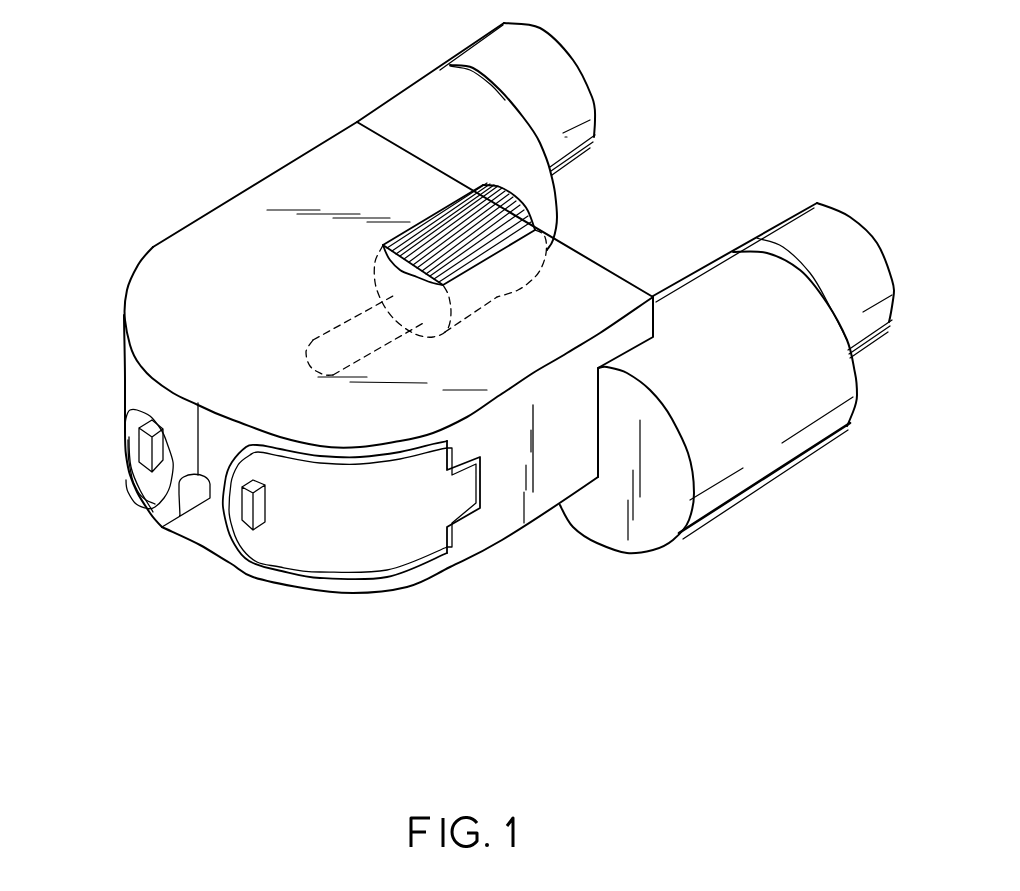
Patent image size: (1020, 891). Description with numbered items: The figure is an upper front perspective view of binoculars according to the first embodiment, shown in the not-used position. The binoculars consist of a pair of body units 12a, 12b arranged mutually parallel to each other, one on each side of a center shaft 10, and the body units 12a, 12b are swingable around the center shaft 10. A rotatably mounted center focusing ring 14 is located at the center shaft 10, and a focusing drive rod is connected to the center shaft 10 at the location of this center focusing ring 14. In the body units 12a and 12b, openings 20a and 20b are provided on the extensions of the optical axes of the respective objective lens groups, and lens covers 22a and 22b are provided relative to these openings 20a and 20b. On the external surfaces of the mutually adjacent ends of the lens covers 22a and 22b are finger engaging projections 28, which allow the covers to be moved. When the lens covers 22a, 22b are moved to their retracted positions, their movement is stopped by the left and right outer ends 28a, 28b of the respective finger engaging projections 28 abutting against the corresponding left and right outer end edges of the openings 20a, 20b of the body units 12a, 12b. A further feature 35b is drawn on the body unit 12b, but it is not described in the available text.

The center shaft 10 is at (332, 310).
The body unit 12a is at (423, 192).
The body unit 12b is at (577, 292).
The center focusing ring 14 is at (473, 257).
The opening 20a is at (133, 452).
The opening 20b is at (372, 563).
The lens cover 22a is at (137, 390).
The lens cover 22b is at (312, 543).
The finger engaging projection 28 is at (242, 521).
The left outer end 28a is at (133, 430).
The right outer end 28b is at (265, 500).
The notch 35b is at (470, 482).